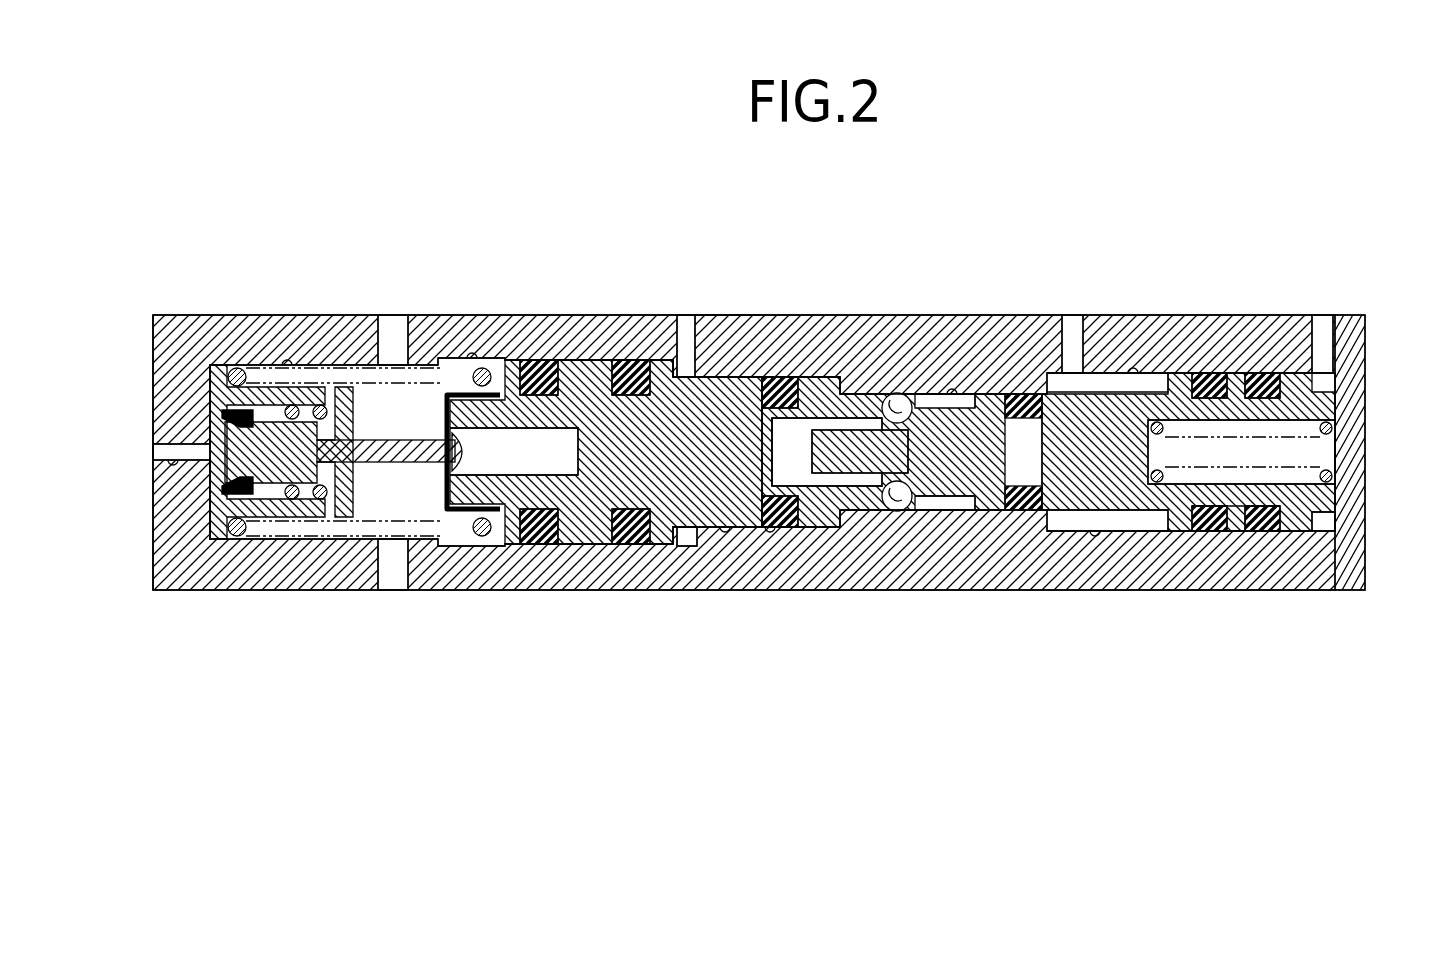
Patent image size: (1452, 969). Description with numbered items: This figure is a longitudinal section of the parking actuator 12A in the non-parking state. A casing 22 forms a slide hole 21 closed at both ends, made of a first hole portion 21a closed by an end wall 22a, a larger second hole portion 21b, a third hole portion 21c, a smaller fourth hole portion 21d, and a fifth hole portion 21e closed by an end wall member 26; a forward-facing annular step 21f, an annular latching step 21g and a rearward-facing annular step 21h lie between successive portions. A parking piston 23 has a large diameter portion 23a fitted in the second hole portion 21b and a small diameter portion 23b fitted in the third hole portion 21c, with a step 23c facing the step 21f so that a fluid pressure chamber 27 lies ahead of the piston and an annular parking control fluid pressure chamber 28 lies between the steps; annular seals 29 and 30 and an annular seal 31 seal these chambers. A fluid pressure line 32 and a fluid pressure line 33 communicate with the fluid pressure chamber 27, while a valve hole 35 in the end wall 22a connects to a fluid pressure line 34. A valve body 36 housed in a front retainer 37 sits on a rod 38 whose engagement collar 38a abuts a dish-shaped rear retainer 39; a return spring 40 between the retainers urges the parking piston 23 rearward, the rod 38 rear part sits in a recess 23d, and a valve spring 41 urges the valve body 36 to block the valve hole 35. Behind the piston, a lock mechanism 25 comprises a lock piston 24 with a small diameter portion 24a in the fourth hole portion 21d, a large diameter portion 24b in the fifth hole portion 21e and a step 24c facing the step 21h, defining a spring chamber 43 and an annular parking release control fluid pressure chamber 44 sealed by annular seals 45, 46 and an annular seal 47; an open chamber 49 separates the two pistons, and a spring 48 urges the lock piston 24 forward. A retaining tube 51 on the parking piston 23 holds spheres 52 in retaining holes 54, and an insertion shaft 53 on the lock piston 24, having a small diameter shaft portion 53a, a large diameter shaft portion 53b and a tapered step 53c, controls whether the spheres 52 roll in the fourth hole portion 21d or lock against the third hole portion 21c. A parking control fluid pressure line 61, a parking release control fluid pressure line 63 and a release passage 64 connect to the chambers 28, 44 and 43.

The parking actuator 12A is at (857, 300).
The slide hole 21 is at (1110, 560).
The first hole portion 21a is at (288, 362).
The second hole portion 21b is at (472, 355).
The third hole portion 21c is at (725, 528).
The fourth hole portion 21d is at (952, 390).
The fifth hole portion 21e is at (1134, 370).
The annular step 21f is at (686, 547).
The annular latching step 21g is at (775, 528).
The annular step 21h is at (1095, 535).
The casing 22 is at (520, 335).
The end wall 22a is at (160, 340).
The parking piston 23 is at (575, 550).
The large diameter portion 23a is at (586, 360).
The small diameter portion 23b is at (766, 377).
The step 23c is at (670, 370).
The recess 23d is at (560, 432).
The lock piston 24 is at (1180, 373).
The small diameter portion 24a is at (1050, 378).
The large diameter portion 24b is at (1198, 520).
The step 24c is at (1150, 531).
The lock mechanism 25 is at (900, 535).
The end wall member 26 is at (1350, 372).
The fluid pressure chamber 27 is at (412, 425).
The parking control fluid pressure chamber 28 is at (717, 315).
The annular seal 29 is at (540, 545).
The annular seal 30 is at (630, 545).
The annular seal 31 is at (778, 528).
The fluid pressure line 32 is at (395, 598).
The fluid pressure line 33 is at (393, 305).
The fluid pressure line 34 is at (140, 446).
The valve hole 35 is at (162, 562).
The valve body 36 is at (212, 565).
The front retainer 37 is at (268, 422).
The rod 38 is at (345, 522).
The engagement collar 38a is at (446, 540).
The rear retainer 39 is at (446, 395).
The return spring 40 is at (228, 372).
The valve spring 41 is at (300, 500).
The spring chamber 43 is at (1327, 520).
The parking release control fluid pressure chamber 44 is at (1102, 378).
The annular seal 45 is at (1212, 373).
The annular seal 46 is at (1262, 373).
The annular seal 47 is at (1022, 512).
The spring 48 is at (1331, 432).
The open chamber 49 is at (785, 470).
The retaining tube 51 is at (888, 378).
The sphere 52 is at (900, 393).
The insertion shaft 53 is at (840, 388).
The small diameter shaft portion 53a is at (773, 450).
The large diameter shaft portion 53b is at (960, 512).
The tapered step 53c is at (907, 465).
The retaining hole 54 is at (912, 440).
The parking control fluid pressure line 61 is at (685, 292).
The parking release control fluid pressure line 63 is at (1073, 290).
The release passage 64 is at (1322, 307).